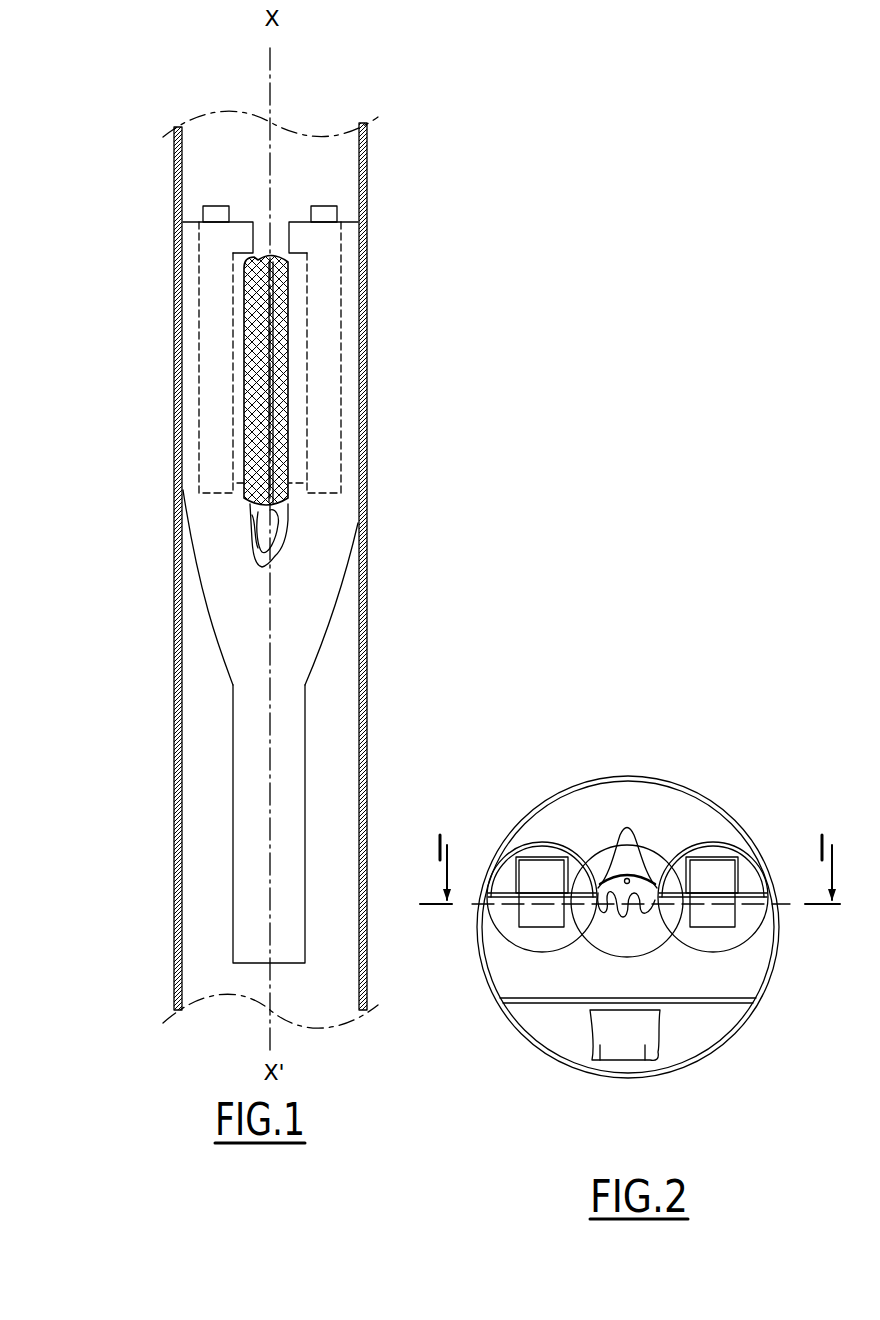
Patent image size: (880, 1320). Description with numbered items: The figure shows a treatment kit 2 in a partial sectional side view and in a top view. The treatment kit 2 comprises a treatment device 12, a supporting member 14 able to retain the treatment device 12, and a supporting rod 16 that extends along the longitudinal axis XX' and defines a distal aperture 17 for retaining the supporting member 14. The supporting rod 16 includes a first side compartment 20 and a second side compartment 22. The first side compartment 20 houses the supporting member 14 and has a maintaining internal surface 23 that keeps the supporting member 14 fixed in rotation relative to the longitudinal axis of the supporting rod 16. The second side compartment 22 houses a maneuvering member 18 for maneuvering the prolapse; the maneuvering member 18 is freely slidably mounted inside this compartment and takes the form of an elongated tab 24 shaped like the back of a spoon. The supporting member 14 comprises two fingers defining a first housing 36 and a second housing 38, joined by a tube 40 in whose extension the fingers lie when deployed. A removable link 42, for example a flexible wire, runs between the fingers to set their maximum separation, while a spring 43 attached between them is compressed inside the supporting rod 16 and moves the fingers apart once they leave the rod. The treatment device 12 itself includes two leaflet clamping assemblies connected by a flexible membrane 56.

In FIG. 1, the treatment kit 2 is at (265, 556).
In FIG. 2, the treatment kit 2 is at (730, 800).
In FIG. 1, the treatment device 12 is at (325, 395).
In FIG. 2, the treatment device 12 is at (745, 937).
In FIG. 1, the supporting member 14 is at (315, 553).
In FIG. 2, the supporting member 14 is at (752, 845).
In FIG. 1, the supporting rod 16 is at (175, 737).
In FIG. 1, the distal aperture 17 is at (300, 172).
In FIG. 2, the maneuvering member 18 is at (640, 1045).
In FIG. 1, the first side compartment 20 is at (215, 927).
In FIG. 2, the first side compartment 20 is at (575, 822).
In FIG. 2, the second side compartment 22 is at (690, 1028).
In FIG. 1, the maintaining internal surface 23 is at (362, 165).
In FIG. 2, the tab 24 is at (617, 1045).
In FIG. 1, the first housing 36 is at (328, 340).
In FIG. 1, the second housing 38 is at (210, 318).
In FIG. 1, the tube 40 is at (270, 860).
In FIG. 1, the removable link 42 is at (262, 565).
In FIG. 2, the removable link 42 is at (625, 828).
In FIG. 2, the spring 43 is at (598, 886).
In FIG. 1, the flexible membrane 56 is at (262, 463).
In FIG. 2, the flexible membrane 56 is at (620, 923).